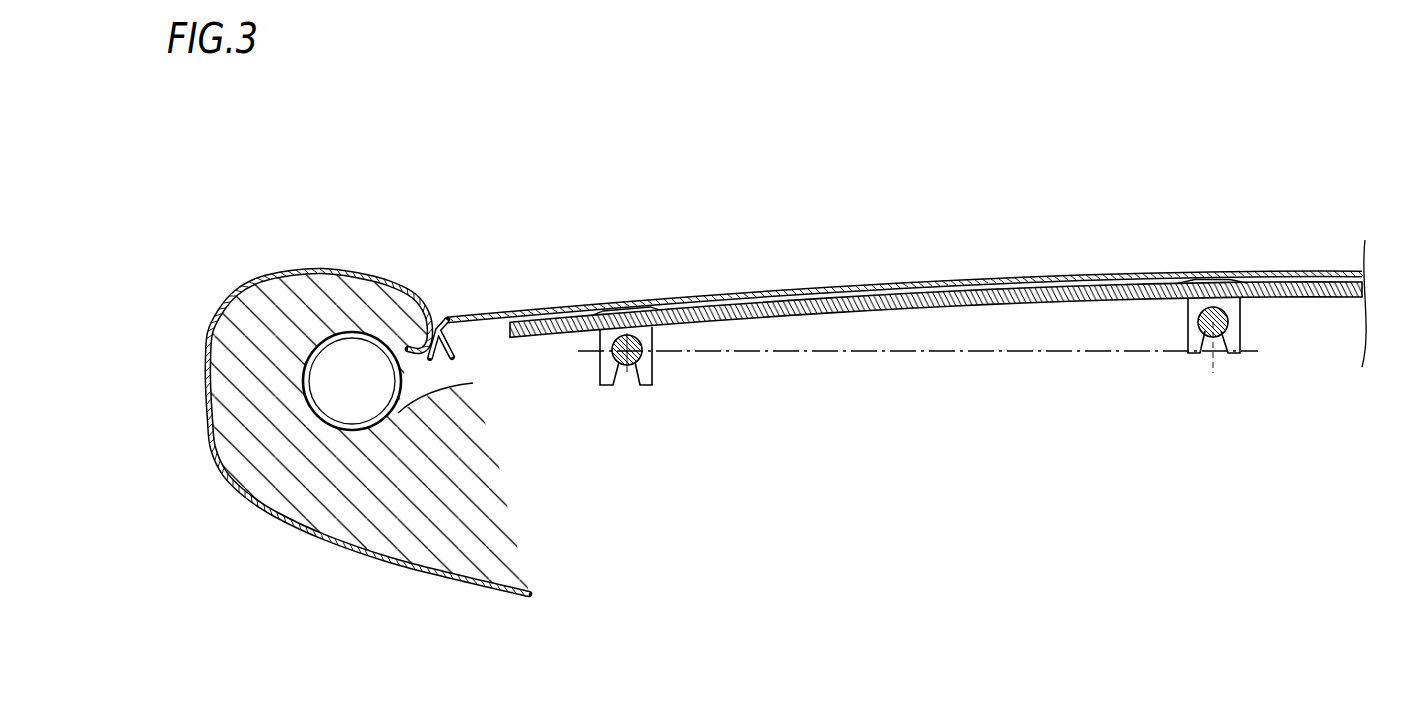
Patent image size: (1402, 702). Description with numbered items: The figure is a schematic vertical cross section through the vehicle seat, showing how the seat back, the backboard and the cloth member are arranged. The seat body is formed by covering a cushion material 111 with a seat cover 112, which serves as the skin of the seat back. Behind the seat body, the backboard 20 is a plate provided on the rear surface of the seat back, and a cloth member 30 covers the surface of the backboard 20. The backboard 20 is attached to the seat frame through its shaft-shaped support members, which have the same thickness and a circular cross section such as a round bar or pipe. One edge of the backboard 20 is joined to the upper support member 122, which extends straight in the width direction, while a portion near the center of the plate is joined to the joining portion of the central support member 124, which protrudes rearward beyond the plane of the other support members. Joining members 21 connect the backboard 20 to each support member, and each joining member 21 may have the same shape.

The cushion material 111 is at (267, 458).
The seat cover 112 is at (328, 547).
The cloth member 30 is at (522, 308).
The backboard 20 is at (885, 309).
The joining member 21 is at (653, 372).
The upper support member 122 is at (620, 367).
The central support member 124 is at (1197, 325).